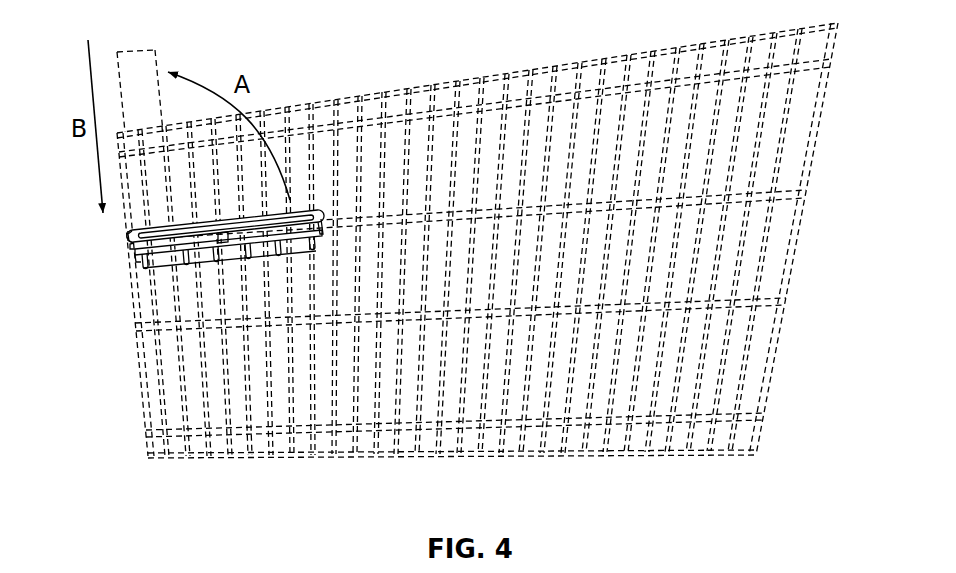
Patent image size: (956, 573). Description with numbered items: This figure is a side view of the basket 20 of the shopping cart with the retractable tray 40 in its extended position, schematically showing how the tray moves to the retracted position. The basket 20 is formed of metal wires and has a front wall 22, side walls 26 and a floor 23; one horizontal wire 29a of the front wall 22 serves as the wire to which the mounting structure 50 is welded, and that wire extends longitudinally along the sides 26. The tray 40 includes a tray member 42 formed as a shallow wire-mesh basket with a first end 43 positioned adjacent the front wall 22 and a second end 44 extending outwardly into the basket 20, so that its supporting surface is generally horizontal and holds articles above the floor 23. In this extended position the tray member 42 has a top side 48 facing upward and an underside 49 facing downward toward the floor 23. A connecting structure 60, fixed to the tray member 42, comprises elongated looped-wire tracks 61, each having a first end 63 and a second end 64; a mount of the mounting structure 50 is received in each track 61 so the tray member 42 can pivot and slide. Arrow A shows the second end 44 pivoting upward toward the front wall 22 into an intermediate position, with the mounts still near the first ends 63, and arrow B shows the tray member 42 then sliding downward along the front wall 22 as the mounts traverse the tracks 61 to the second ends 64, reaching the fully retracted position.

The basket 20 is at (459, 270).
The front wall 22 is at (147, 415).
The floor 23 is at (555, 458).
The side walls 26 is at (640, 372).
The horizontal wire 29a is at (124, 246).
The retractable tray 40 is at (300, 256).
The tray member 42 is at (237, 262).
The first end 43 is at (127, 261).
The second end 44 is at (133, 45).
The top side 48 is at (312, 213).
The underside 49 is at (214, 270).
The mounting structure 50 is at (123, 233).
The connecting structure 60 is at (205, 253).
The track 61 is at (252, 258).
The first end of track 63 is at (148, 258).
The second end of track 64 is at (328, 214).